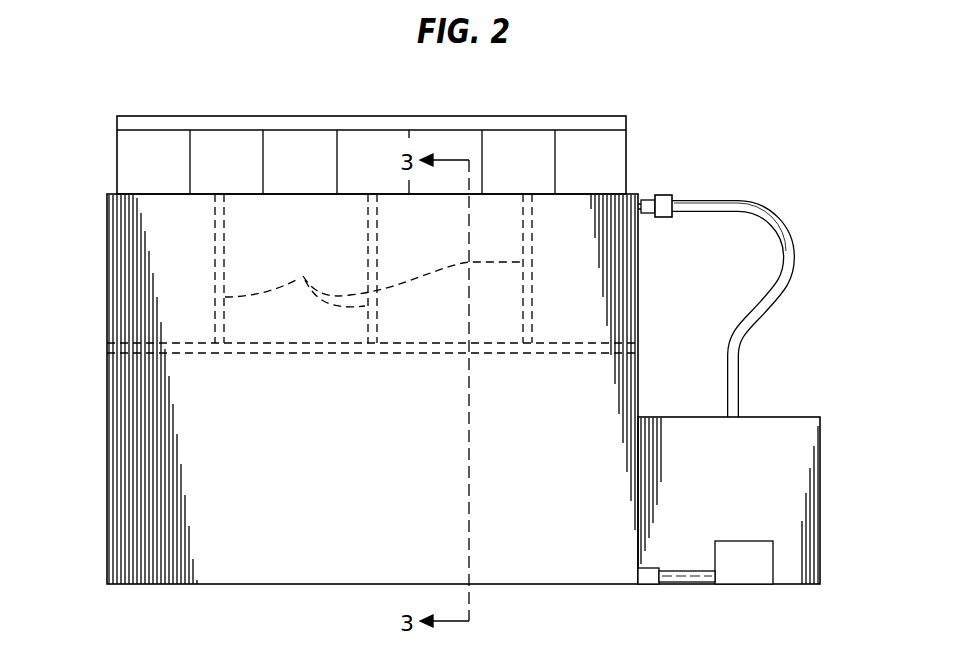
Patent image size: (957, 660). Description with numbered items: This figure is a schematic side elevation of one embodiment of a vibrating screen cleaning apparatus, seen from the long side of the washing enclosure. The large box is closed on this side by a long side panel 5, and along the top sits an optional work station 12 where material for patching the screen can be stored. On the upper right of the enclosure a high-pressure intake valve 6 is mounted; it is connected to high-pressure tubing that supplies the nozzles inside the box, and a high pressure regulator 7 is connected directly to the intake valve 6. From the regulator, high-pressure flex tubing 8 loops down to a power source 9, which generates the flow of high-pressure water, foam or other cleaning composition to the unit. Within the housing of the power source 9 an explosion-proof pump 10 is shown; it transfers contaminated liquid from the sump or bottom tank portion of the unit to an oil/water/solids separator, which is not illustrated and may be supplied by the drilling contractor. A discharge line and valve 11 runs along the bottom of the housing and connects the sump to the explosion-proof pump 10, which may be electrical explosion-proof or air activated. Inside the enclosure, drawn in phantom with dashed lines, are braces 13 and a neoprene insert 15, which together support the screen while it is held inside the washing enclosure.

The long side panel 5 is at (135, 472).
The high-pressure intake valve 6 is at (650, 199).
The high pressure regulator 7 is at (670, 195).
The high-pressure flex tubing 8 is at (793, 258).
The power source 9 is at (822, 462).
The explosion-proof pump 10 is at (745, 540).
The discharge line and valve 11 is at (690, 570).
The work station 12 is at (320, 130).
The braces 13 is at (309, 276).
The neoprene insert 15 is at (137, 342).